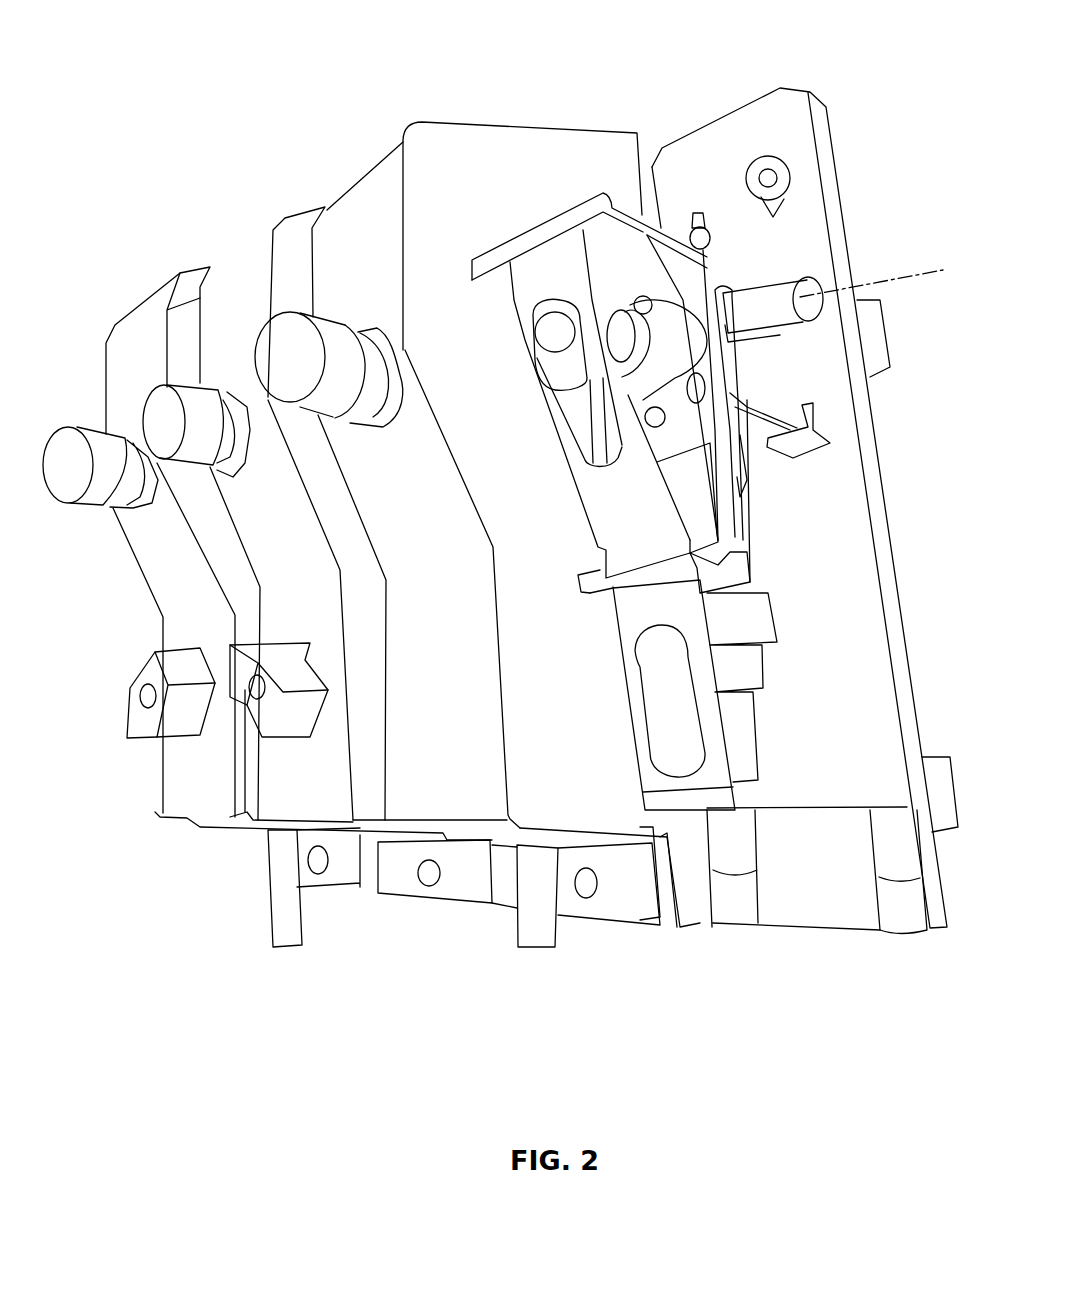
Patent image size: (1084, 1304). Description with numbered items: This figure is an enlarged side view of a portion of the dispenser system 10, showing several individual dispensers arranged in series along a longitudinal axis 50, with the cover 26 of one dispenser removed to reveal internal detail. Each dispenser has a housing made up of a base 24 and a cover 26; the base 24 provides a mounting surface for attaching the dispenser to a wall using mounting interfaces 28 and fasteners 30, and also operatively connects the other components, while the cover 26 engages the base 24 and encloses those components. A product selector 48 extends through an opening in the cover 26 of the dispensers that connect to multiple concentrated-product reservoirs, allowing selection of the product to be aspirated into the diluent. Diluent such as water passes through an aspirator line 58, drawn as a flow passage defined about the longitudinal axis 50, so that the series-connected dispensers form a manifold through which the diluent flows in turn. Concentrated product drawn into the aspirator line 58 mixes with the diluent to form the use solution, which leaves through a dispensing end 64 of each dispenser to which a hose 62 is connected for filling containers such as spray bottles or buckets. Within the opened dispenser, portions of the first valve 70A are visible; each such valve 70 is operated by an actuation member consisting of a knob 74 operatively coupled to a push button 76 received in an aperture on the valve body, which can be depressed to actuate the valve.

The dispenser system 10 is at (732, 35).
The base 24 is at (847, 485).
The cover 26 is at (162, 283).
The mounting interfaces 28 is at (710, 233).
The fasteners 30 is at (782, 183).
The product selector 48 is at (175, 650).
The longitudinal axis 50 is at (907, 277).
The aspirator line 58 is at (805, 280).
The hose 62 is at (277, 932).
The dispensing end 64 is at (216, 838).
The valve 70 is at (784, 648).
The first valve 70A is at (750, 568).
The knob 74 is at (107, 438).
The push button 76 is at (540, 337).